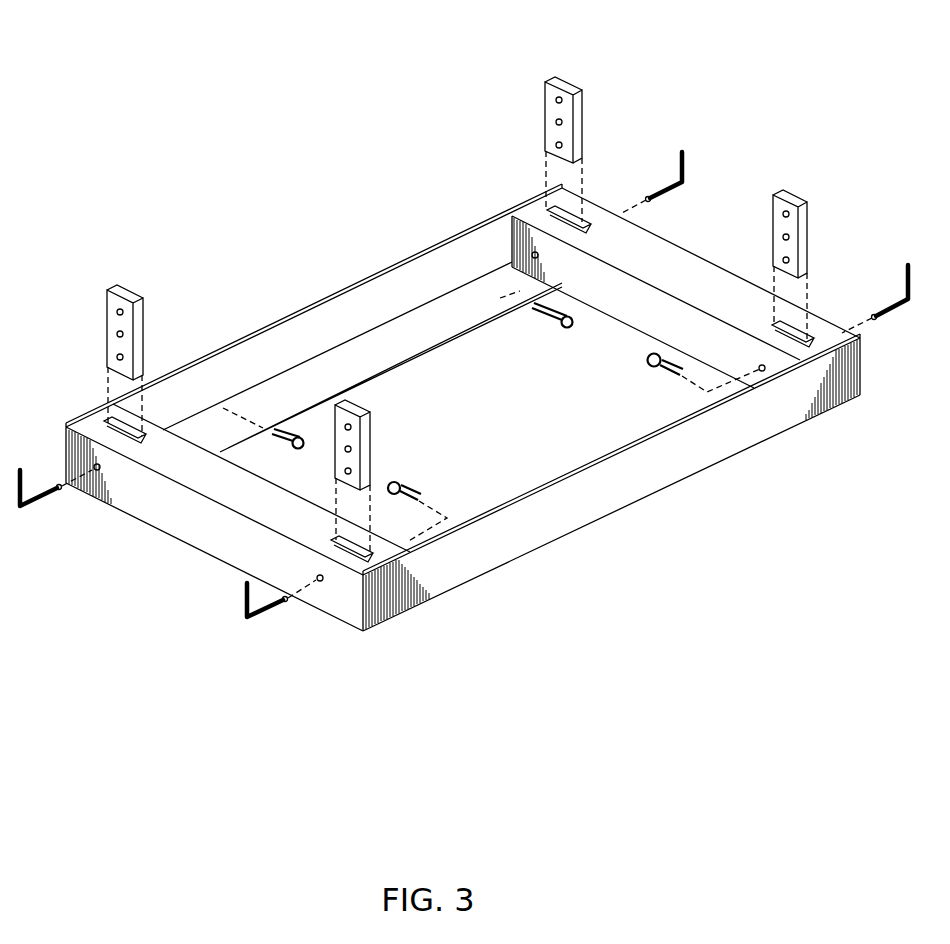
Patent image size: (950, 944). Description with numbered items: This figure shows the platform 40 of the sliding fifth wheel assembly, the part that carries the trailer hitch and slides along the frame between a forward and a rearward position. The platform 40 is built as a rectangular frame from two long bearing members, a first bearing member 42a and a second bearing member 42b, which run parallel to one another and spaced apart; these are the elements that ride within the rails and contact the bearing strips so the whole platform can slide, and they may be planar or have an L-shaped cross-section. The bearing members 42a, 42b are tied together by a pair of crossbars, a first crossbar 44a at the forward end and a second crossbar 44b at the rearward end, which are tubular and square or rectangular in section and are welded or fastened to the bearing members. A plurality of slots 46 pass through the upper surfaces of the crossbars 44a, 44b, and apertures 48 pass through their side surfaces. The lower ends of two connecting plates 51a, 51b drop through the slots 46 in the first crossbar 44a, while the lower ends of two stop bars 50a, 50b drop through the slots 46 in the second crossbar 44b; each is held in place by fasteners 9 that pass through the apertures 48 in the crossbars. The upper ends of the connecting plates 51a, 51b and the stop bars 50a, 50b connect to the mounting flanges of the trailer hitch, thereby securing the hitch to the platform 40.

The platform 40 is at (224, 133).
The first bearing member 42a is at (655, 482).
The second bearing member 42b is at (353, 288).
The first crossbar 44a is at (186, 516).
The second crossbar 44b is at (678, 242).
The slots 46 is at (590, 228).
The apertures 48 is at (532, 252).
The stop bar 50a is at (805, 200).
The stop bar 50b is at (578, 85).
The connecting plate 51a is at (365, 405).
The connecting plate 51b is at (135, 292).
The fasteners 9 is at (688, 158).